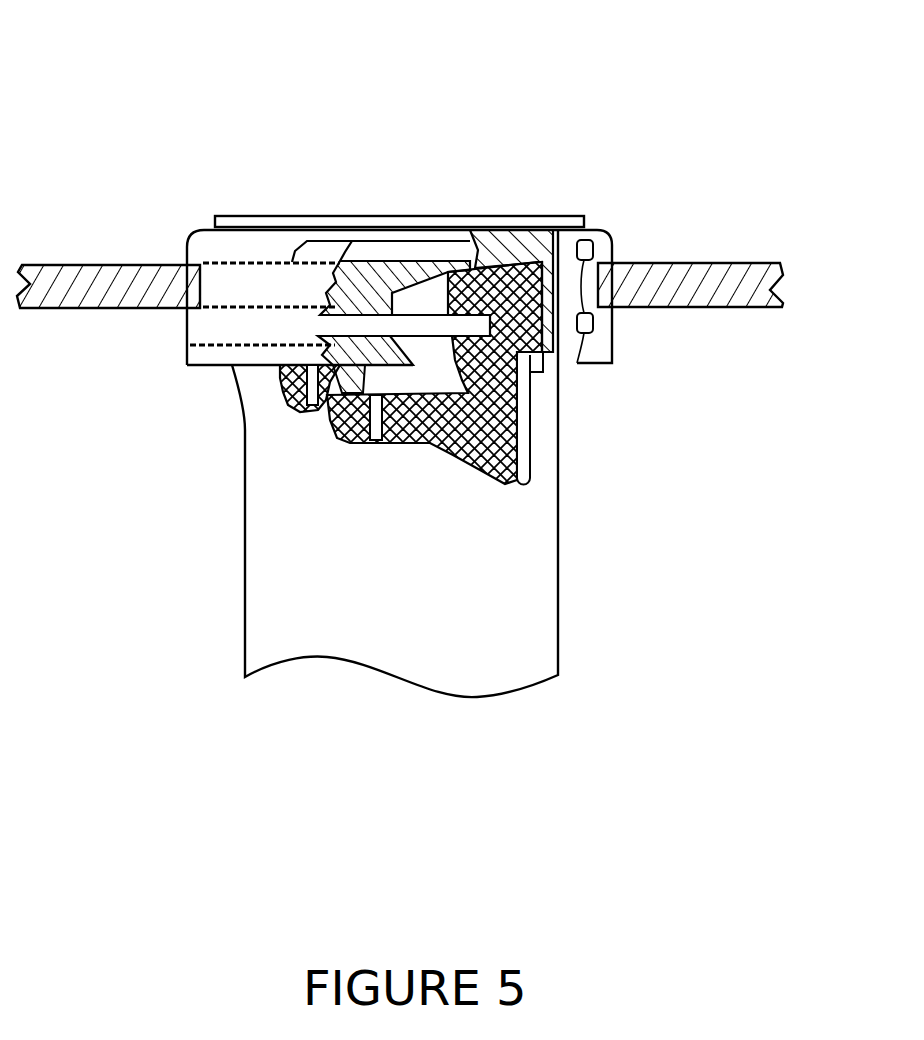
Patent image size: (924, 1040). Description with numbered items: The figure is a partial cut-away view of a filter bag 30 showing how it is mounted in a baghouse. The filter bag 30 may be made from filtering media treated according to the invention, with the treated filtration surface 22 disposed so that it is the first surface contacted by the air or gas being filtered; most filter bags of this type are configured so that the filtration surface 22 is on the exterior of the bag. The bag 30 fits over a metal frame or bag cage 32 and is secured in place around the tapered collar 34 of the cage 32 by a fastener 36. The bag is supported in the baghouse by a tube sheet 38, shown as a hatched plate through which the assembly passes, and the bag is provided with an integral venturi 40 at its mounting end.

The filtration surface 22 is at (518, 620).
The filter bag 30 is at (583, 567).
The bag cage 32 is at (243, 250).
The tapered collar 34 is at (333, 412).
The fastener 36 is at (240, 330).
The tube sheet 38 is at (712, 261).
The venturi 40 is at (387, 440).